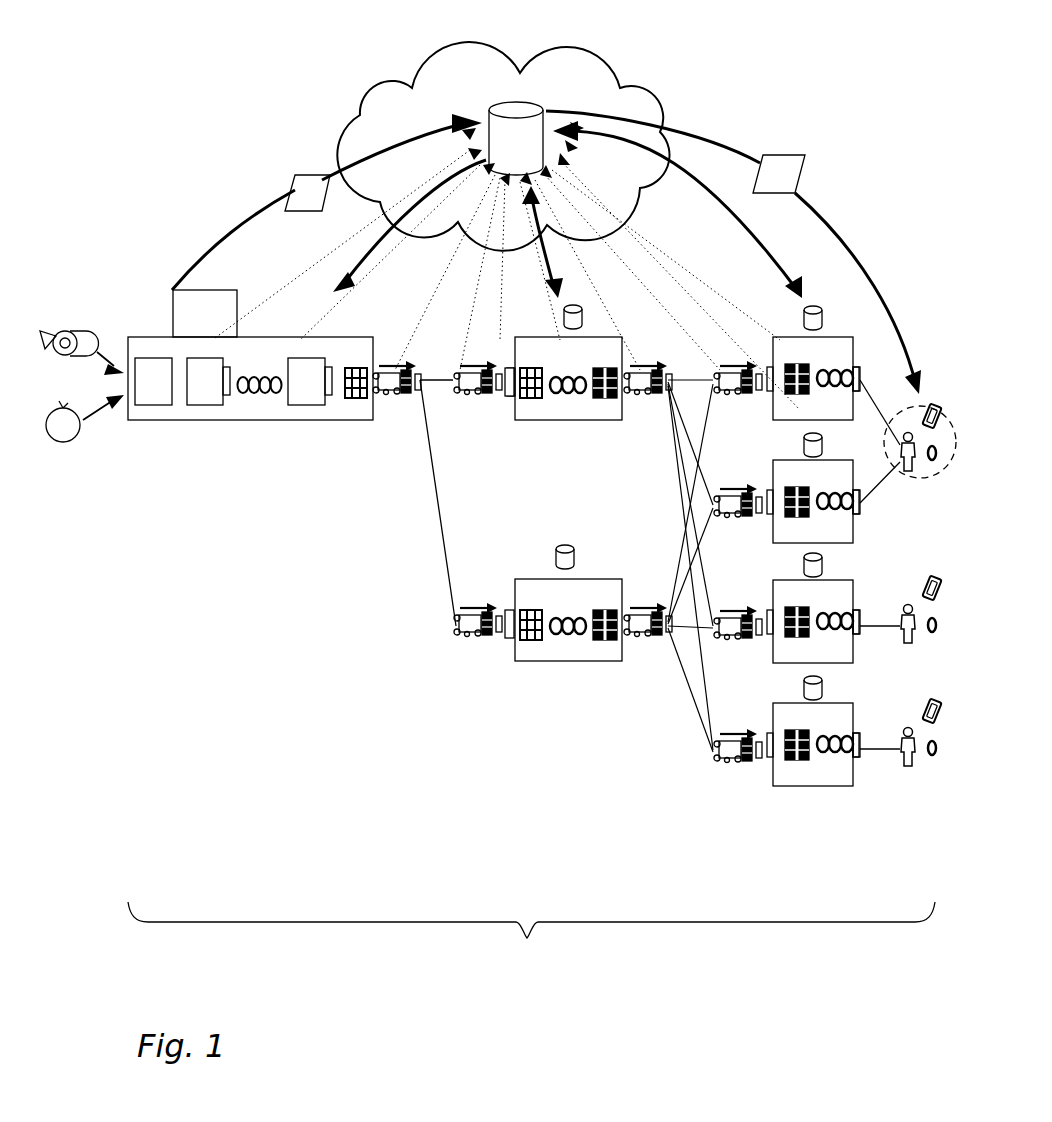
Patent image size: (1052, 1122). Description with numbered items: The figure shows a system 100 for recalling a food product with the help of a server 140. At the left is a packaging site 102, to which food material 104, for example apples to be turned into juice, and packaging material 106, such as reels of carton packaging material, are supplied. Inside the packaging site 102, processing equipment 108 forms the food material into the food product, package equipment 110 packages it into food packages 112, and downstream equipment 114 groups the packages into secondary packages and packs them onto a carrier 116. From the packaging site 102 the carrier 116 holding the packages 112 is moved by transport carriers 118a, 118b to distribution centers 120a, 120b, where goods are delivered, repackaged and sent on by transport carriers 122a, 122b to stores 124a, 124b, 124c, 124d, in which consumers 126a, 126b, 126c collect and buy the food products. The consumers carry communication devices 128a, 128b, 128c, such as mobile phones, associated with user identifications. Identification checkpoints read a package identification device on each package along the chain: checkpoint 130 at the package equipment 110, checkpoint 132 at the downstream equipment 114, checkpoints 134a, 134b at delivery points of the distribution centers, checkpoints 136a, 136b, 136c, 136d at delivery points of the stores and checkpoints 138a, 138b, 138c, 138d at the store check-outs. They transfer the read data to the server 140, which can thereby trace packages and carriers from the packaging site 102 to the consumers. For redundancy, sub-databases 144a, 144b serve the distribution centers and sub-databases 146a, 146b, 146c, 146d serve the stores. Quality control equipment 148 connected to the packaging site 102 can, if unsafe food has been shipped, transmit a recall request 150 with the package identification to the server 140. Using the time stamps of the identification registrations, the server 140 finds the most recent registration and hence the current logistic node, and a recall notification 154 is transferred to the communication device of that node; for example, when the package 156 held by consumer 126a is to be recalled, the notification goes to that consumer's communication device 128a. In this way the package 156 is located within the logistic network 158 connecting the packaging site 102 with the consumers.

The system 100 is at (200, 108).
The packaging site 102 is at (262, 455).
The food material 104 is at (65, 427).
The packaging material 106 is at (75, 330).
The processing equipment 108 is at (152, 395).
The package equipment 110 is at (227, 395).
The food packages 112 is at (262, 393).
The downstream equipment 114 is at (312, 395).
The carrier 116 is at (352, 422).
The transport carrier 118a is at (468, 402).
The transport carrier 118b is at (468, 643).
The distribution center 120a is at (578, 415).
The distribution center 120b is at (575, 665).
The transport carrier 122a is at (655, 402).
The transport carrier 122b is at (655, 644).
The store 124a is at (782, 400).
The store 124b is at (782, 523).
The store 124c is at (782, 645).
The store 124d is at (782, 778).
The consumer 126a is at (883, 480).
The consumer 126b is at (898, 632).
The consumer 126c is at (903, 758).
The communication device 128a is at (920, 420).
The communication device 128b is at (928, 590).
The communication device 128c is at (928, 728).
The identification checkpoint 130 is at (205, 392).
The identification checkpoint 132 is at (330, 393).
The identification checkpoint 134a is at (508, 400).
The identification checkpoint 134b is at (508, 642).
The identification checkpoint 136a is at (805, 363).
The identification checkpoint 136b is at (806, 488).
The identification checkpoint 136c is at (805, 608).
The identification checkpoint 136d is at (806, 731).
The identification checkpoint 138a is at (858, 366).
The identification checkpoint 138b is at (858, 488).
The identification checkpoint 138c is at (860, 608).
The identification checkpoint 138d is at (860, 731).
The server 140 is at (516, 112).
The sub-database 144a is at (584, 316).
The sub-database 144b is at (576, 558).
The sub-database 146a is at (803, 318).
The sub-database 146b is at (803, 445).
The sub-database 146c is at (803, 565).
The sub-database 146d is at (803, 688).
The quality control equipment 148 is at (218, 303).
The recall request 150 is at (305, 176).
The control signal 154 is at (778, 156).
The package 156 is at (932, 476).
The logistic network 158 is at (531, 945).